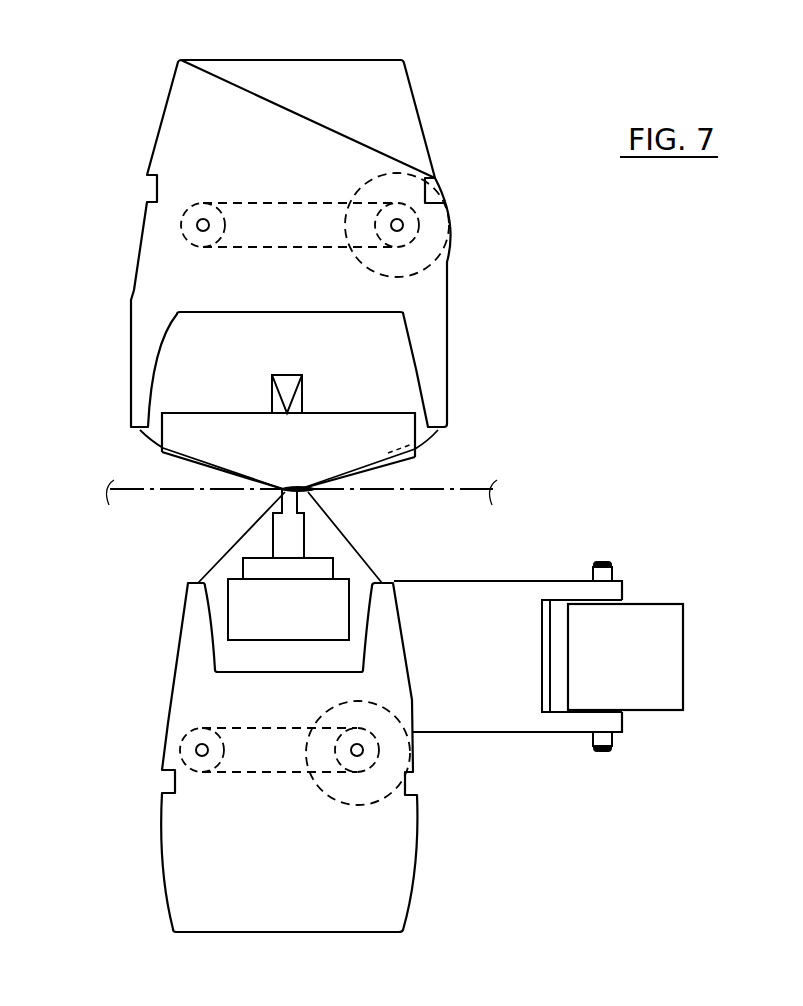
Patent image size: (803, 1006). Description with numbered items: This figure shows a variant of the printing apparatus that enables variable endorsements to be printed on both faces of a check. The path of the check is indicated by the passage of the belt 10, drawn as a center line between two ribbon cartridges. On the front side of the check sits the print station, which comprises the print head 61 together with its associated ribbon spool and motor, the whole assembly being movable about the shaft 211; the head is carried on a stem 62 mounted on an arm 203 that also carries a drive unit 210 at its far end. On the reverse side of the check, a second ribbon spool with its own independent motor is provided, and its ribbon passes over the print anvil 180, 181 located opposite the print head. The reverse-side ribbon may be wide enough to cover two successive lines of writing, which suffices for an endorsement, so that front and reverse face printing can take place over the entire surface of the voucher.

The belt 10 is at (186, 493).
The print head 61 is at (243, 610).
The actuator shaft 62 is at (300, 533).
The print anvil 180 is at (183, 438).
The print anvil 181 is at (296, 481).
The arm 203 is at (480, 608).
The motor 210 is at (673, 671).
The shaft 211 is at (612, 740).